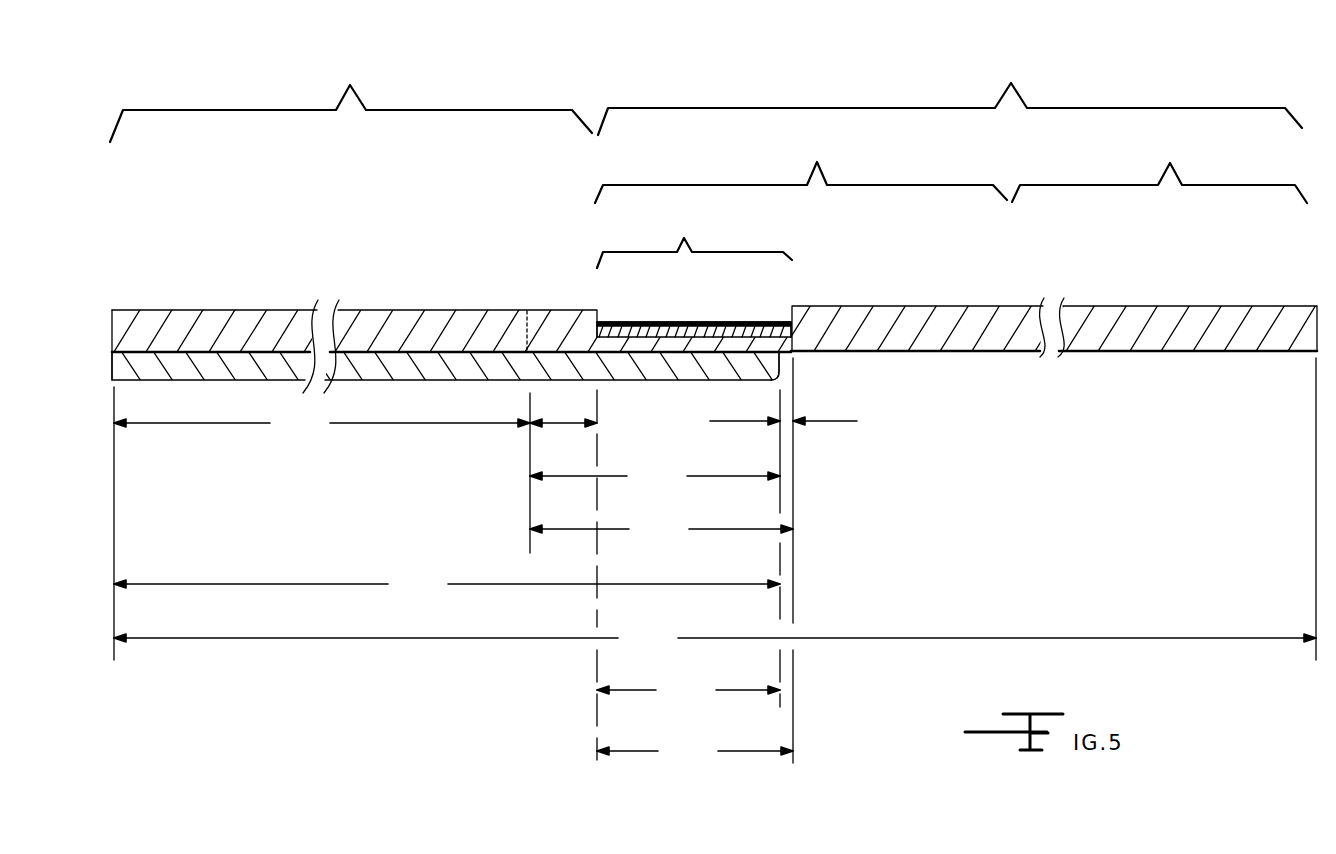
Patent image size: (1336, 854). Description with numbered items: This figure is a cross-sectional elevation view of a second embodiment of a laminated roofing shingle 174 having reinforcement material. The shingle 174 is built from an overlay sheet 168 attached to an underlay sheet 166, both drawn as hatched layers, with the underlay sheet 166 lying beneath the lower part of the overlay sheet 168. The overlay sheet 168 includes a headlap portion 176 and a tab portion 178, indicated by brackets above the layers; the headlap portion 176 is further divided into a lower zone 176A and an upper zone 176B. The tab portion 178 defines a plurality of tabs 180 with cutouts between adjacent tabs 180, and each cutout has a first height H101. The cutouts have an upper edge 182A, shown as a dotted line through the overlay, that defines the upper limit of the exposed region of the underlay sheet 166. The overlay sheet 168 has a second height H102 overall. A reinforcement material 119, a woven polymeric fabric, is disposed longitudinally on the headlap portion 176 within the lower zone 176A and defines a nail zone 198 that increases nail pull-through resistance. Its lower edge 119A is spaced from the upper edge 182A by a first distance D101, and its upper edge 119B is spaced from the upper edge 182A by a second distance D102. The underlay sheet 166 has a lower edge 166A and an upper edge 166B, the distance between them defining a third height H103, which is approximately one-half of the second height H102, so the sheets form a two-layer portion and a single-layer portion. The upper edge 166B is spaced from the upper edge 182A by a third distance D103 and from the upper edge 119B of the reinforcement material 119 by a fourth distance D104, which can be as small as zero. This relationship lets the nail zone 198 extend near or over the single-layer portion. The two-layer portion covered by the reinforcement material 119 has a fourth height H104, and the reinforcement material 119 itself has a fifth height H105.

The reinforcement material 119 is at (678, 322).
The lower edge of reinforcement material 119A is at (600, 322).
The upper edge of reinforcement material 119B is at (787, 322).
The underlay sheet 166 is at (112, 352).
The lower edge of underlay sheet 166A is at (112, 372).
The upper edge of underlay sheet 166B is at (778, 378).
The overlay sheet 168 is at (1178, 306).
The laminated roofing shingle 174 is at (366, 202).
The headlap portion 176 is at (950, 93).
The lower zone of headlap portion 176A is at (801, 169).
The upper zone of headlap portion 176B is at (1159, 169).
The tab portion 178 is at (351, 99).
The tab 180 is at (206, 311).
The upper edge of cutouts 182A is at (526, 328).
The nail zone 198 is at (694, 240).
The first distance D101 is at (564, 410).
The second distance D102 is at (661, 530).
The third distance D103 is at (655, 477).
The fourth distance D104 is at (814, 422).
The first height H101 is at (322, 424).
The second height H102 is at (715, 639).
The third height H103 is at (447, 585).
The fourth height H104 is at (688, 691).
The fifth height H105 is at (695, 752).